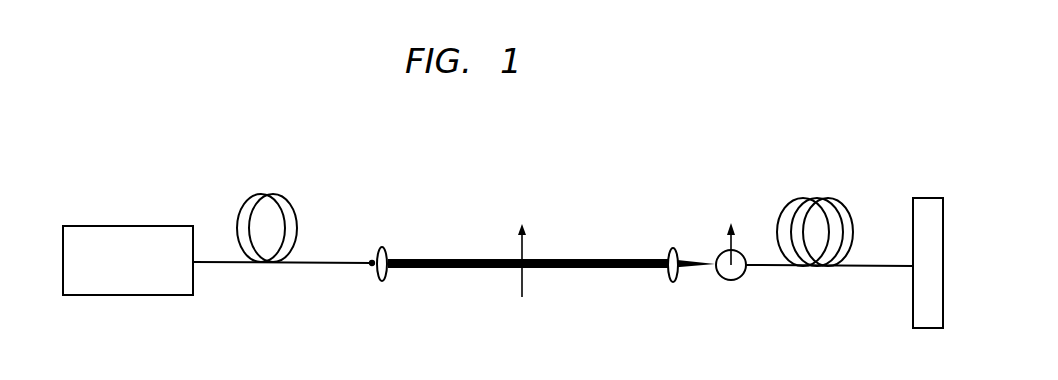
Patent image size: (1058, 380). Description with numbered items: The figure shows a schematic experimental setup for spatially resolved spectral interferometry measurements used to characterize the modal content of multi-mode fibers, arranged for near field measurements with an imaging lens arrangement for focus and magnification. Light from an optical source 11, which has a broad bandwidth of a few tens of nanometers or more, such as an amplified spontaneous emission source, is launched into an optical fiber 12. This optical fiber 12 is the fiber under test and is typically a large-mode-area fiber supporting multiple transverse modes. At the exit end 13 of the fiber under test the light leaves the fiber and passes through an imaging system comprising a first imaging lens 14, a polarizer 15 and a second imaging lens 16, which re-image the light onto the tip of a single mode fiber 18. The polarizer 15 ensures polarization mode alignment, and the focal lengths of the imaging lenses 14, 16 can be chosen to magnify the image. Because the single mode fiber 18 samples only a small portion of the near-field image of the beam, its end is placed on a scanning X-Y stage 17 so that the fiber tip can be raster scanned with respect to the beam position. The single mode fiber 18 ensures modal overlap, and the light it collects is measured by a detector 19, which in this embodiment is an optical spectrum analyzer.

The optical source 11 is at (139, 226).
The optical fiber 12 is at (241, 264).
The fiber end 13 is at (371, 266).
The imaging lens 14 is at (389, 254).
The polarizer 15 is at (526, 237).
The imaging lens 16 is at (670, 249).
The scanning X-Y stage 17 is at (731, 281).
The single mode fiber 18 is at (873, 267).
The detector 19 is at (922, 198).